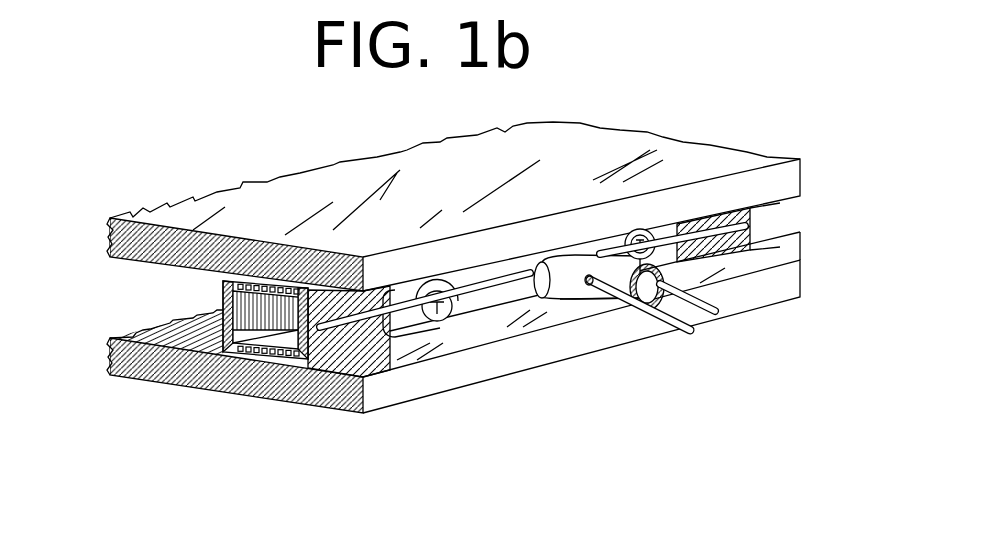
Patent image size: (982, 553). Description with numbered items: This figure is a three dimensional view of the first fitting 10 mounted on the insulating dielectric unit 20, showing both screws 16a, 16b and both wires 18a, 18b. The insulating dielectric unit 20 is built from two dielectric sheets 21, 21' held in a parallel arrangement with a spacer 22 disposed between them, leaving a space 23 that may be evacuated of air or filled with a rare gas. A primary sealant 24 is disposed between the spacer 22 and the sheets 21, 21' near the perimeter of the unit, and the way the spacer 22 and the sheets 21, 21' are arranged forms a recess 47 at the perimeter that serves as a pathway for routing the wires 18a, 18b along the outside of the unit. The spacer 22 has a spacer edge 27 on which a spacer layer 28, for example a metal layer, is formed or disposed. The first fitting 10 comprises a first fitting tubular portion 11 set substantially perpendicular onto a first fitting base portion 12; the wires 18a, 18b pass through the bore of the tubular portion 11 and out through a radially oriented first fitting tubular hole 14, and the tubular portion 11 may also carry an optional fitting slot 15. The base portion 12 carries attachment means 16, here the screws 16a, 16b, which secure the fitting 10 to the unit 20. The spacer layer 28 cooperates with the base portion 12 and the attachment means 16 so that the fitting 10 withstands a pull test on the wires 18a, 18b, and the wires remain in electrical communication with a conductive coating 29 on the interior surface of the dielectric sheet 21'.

The first fitting 10 is at (596, 329).
The first fitting tubular portion 11 is at (620, 303).
The first fitting base portion 12 is at (667, 232).
The first fitting tubular hole 14 is at (530, 263).
The fitting slot 15 is at (593, 282).
The attachment means 16 is at (628, 425).
The screw 16a is at (668, 268).
The screw 16b is at (437, 318).
The wire 18a is at (735, 227).
The wire 18b is at (500, 290).
The insulating dielectric unit 20 is at (675, 62).
The dielectric sheet 21 is at (453, 206).
The dielectric sheet 21' is at (439, 347).
The spacer 22 is at (233, 286).
The space 23 is at (160, 307).
The primary sealant 24 is at (268, 283).
The spacer edge 27 is at (292, 372).
The spacer layer 28 is at (340, 343).
The conductive coating 29 is at (135, 338).
The recess 47 is at (792, 241).